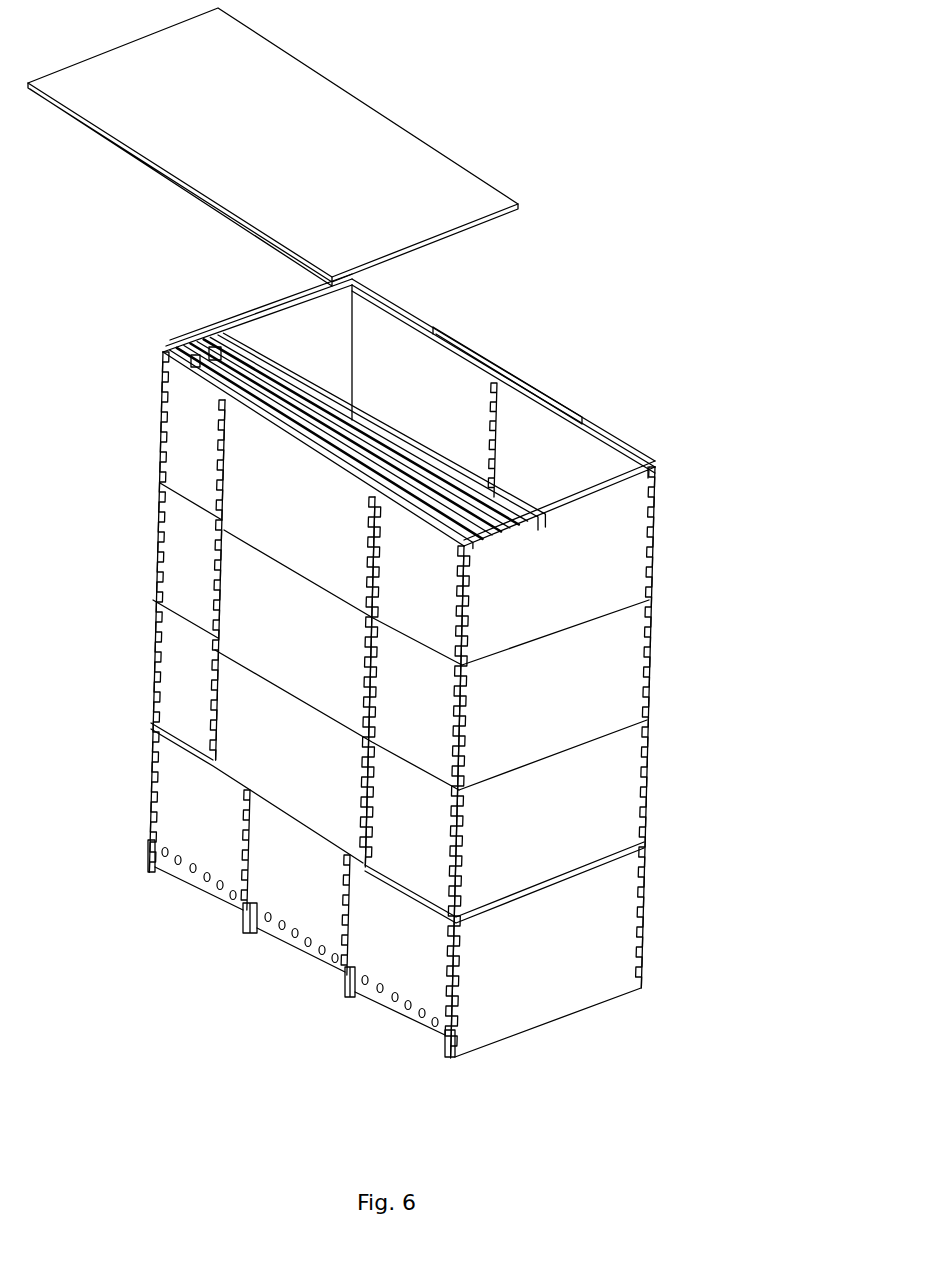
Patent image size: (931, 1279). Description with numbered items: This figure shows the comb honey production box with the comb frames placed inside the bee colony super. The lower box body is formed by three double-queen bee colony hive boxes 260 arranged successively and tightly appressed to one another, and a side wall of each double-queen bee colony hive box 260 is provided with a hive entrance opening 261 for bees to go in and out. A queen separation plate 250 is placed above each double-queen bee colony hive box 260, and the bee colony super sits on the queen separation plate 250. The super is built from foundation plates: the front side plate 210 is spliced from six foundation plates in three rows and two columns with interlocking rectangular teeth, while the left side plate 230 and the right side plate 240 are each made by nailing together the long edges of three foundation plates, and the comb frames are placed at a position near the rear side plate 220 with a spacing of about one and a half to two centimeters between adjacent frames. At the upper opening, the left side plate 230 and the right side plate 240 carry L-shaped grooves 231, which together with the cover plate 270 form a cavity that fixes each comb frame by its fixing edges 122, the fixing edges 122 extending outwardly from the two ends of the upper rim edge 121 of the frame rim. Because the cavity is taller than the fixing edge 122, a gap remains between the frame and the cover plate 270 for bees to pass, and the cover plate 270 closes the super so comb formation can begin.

The cover plate 270 is at (373, 163).
The L-shaped groove 231 is at (362, 268).
The right side plate 240 is at (303, 348).
The fixing edge 122 is at (188, 347).
The upper rim edge 121 is at (365, 418).
The front side plate 210 is at (515, 410).
The rear side plate 220 is at (203, 422).
The left side plate 230 is at (578, 715).
The queen separation plate 250 is at (558, 882).
The double-queen bee colony hive box 260 is at (410, 953).
The hive entrance opening 261 is at (202, 885).